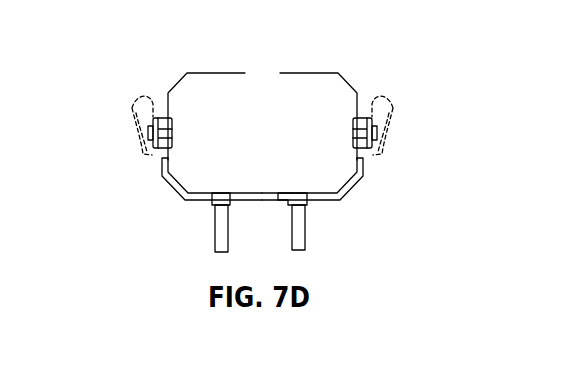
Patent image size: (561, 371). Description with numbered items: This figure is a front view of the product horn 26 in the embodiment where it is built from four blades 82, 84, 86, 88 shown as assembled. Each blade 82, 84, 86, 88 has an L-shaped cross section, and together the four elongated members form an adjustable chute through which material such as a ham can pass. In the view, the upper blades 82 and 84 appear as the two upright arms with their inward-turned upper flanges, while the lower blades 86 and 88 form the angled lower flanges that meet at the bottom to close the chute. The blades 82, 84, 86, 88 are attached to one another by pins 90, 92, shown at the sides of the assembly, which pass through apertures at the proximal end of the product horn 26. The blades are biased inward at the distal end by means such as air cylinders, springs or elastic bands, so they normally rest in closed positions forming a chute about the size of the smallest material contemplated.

The product horn 26 is at (298, 60).
The blade 82 is at (350, 82).
The blade 84 is at (227, 72).
The blade 86 is at (172, 187).
The blade 88 is at (362, 176).
The pin 90 is at (132, 108).
The pin 92 is at (393, 108).